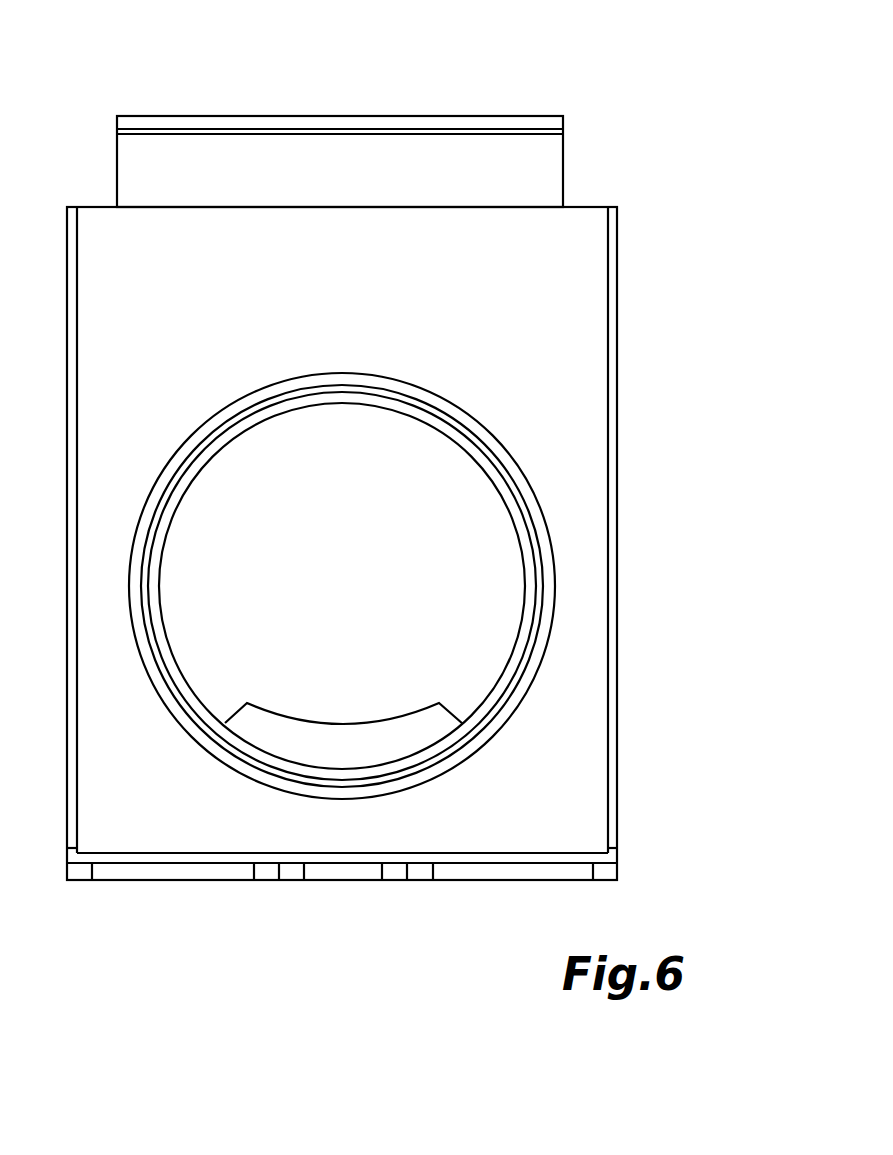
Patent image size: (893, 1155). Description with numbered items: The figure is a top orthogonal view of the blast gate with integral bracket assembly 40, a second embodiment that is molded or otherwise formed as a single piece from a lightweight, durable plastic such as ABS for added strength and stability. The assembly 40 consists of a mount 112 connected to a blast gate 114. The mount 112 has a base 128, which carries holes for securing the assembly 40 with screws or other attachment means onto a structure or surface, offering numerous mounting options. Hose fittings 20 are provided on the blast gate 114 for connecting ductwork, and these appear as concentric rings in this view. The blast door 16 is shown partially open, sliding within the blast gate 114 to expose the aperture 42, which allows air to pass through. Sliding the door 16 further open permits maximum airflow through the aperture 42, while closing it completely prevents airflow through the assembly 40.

The blast door 16 is at (432, 167).
The hose fittings 20 is at (368, 402).
The blast gate with integral bracket assembly 40 is at (678, 170).
The aperture 42 is at (398, 740).
The mount 112 is at (633, 875).
The blast gate 114 is at (560, 368).
The base 128 is at (502, 870).